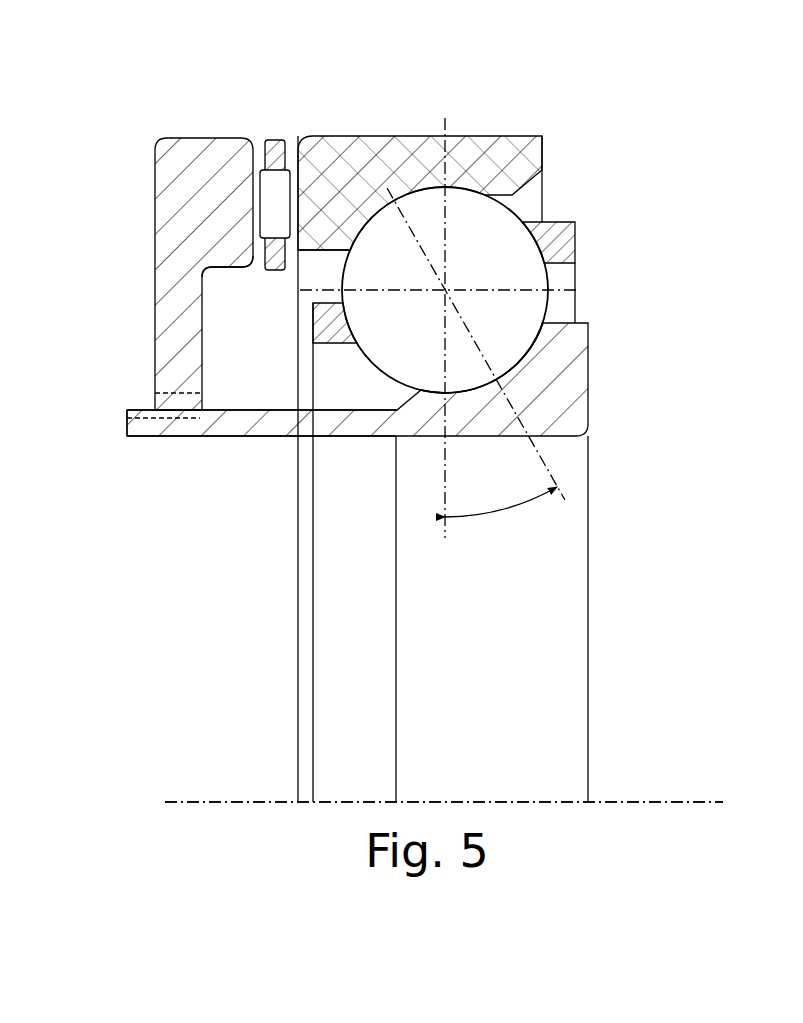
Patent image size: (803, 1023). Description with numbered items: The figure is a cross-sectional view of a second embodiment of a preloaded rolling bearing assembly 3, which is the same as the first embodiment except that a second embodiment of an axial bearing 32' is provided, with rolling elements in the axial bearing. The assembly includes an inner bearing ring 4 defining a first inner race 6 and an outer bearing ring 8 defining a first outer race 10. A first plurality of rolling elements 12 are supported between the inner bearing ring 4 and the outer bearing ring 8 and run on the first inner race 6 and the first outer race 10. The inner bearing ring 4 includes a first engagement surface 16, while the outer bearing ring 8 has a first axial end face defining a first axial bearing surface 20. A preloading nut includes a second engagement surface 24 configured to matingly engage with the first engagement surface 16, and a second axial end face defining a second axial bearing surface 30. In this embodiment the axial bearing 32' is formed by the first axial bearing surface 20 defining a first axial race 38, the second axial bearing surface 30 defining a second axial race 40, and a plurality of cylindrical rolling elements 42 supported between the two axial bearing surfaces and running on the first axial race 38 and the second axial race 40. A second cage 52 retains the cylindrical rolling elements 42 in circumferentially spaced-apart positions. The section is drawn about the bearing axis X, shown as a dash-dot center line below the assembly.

The rolling bearing assembly 3 is at (538, 132).
The inner bearing ring 4 is at (570, 370).
The first inner race 6 is at (498, 376).
The outer bearing ring 8 is at (467, 160).
The first outer race 10 is at (400, 170).
The first plurality of rolling elements 12 is at (485, 238).
The first engagement surface 16 is at (127, 413).
The first axial bearing surface 20 is at (300, 228).
The second engagement surface 24 is at (155, 402).
The second axial bearing surface 30 is at (253, 182).
The axial bearing 32' is at (219, 94).
The first axial race 38 is at (300, 165).
The second axial race 40 is at (253, 230).
The cylindrical rolling elements 42 is at (285, 170).
The second cage 52 is at (275, 140).
The axis of rotation X is at (662, 802).